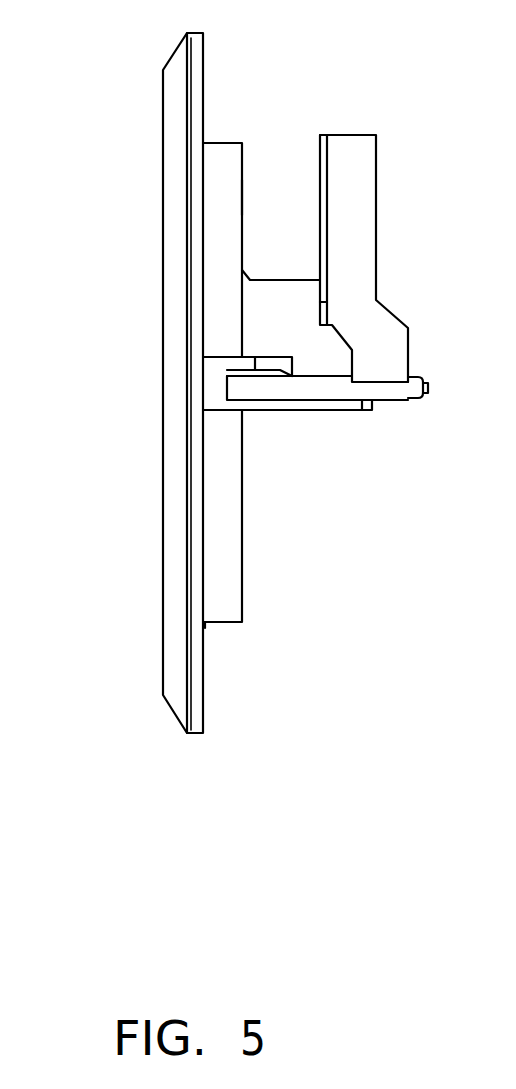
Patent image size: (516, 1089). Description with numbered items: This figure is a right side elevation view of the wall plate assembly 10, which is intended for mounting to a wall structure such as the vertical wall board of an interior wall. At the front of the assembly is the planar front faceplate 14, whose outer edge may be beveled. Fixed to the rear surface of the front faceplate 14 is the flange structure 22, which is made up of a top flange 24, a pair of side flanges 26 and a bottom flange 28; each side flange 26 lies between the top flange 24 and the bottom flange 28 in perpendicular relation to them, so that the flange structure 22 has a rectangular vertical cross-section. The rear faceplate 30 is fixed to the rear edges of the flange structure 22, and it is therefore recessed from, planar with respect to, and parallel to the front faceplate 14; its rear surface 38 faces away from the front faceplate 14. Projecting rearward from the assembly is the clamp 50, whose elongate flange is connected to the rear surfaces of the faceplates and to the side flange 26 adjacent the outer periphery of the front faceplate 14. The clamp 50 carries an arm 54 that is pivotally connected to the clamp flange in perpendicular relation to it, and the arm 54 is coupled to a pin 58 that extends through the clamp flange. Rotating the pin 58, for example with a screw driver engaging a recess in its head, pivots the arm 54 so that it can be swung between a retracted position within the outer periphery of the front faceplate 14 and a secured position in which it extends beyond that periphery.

The wall plate assembly 10 is at (243, 381).
The front faceplate 14 is at (125, 123).
The flange structure 22 is at (270, 580).
The top flange 24 is at (223, 143).
The side flange 26 is at (222, 497).
The bottom flange 28 is at (222, 627).
The rear faceplate 30 is at (272, 197).
The rear surface 38 is at (242, 447).
The clamp 50 is at (361, 271).
The arm 54 is at (347, 135).
The pin 58 is at (428, 388).